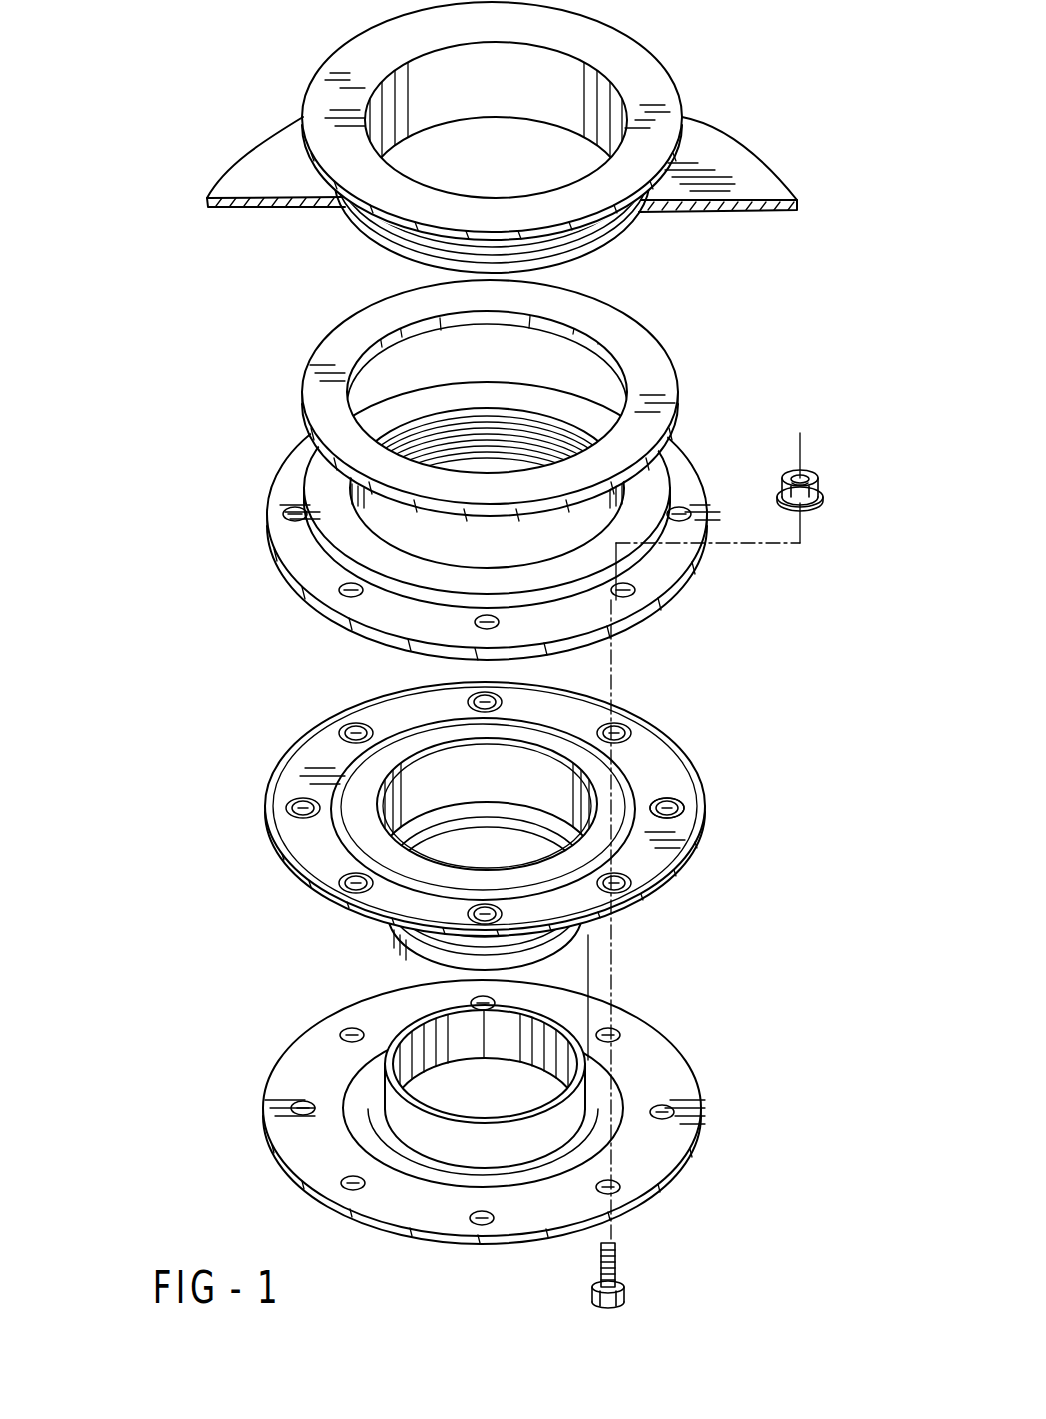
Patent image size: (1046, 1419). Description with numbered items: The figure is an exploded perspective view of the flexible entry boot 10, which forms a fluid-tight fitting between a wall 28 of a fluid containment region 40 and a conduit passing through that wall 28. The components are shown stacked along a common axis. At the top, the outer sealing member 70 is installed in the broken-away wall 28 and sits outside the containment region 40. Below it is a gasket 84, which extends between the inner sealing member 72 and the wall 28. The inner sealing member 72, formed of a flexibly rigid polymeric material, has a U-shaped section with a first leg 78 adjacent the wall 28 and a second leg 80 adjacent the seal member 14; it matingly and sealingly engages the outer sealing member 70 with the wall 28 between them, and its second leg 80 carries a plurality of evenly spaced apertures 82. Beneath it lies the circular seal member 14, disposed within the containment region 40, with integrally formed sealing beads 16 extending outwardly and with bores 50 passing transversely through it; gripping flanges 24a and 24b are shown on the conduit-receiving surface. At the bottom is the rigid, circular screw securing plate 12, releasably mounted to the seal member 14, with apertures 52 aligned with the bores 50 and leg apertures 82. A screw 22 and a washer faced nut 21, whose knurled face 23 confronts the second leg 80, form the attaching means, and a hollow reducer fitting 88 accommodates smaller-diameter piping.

The flexible entry boot 10 is at (176, 492).
The screw securing plate 12 is at (520, 1131).
The seal member 14 is at (482, 794).
The sealing beads 16 is at (367, 718).
The washer faced nut 21 is at (796, 448).
The screw 22 is at (617, 1257).
The knurled face 23 is at (780, 503).
The gripping flange 24a is at (498, 798).
The second gripping flange 24b is at (432, 827).
The wall 28 is at (750, 158).
The fluid containment region 40 is at (196, 742).
The bores 50 is at (668, 806).
The apertures 52 is at (667, 1107).
The outer sealing member 70 is at (648, 73).
The inner sealing member 72 is at (517, 520).
The first leg 78 is at (312, 471).
The second leg 80 is at (290, 553).
The apertures 82 is at (352, 592).
The gasket 84 is at (663, 360).
The reducer fitting 88 is at (435, 1148).